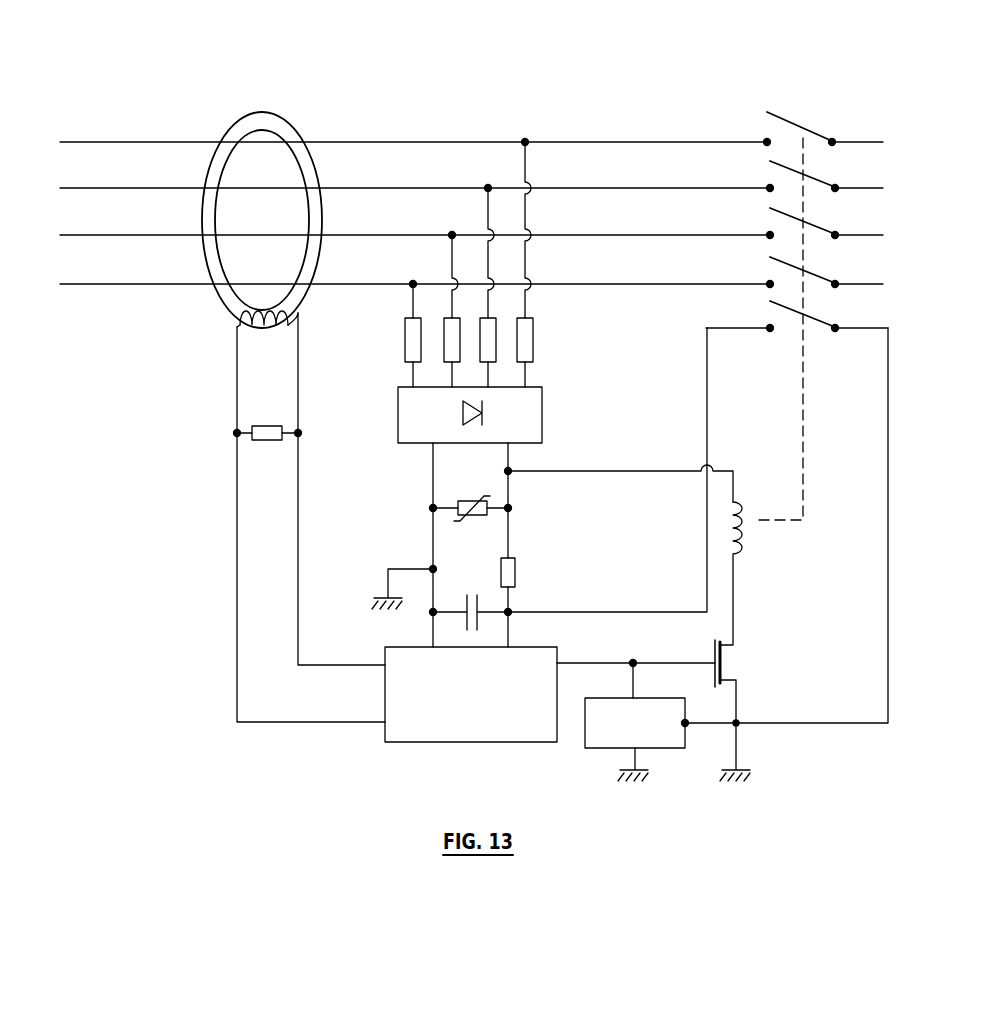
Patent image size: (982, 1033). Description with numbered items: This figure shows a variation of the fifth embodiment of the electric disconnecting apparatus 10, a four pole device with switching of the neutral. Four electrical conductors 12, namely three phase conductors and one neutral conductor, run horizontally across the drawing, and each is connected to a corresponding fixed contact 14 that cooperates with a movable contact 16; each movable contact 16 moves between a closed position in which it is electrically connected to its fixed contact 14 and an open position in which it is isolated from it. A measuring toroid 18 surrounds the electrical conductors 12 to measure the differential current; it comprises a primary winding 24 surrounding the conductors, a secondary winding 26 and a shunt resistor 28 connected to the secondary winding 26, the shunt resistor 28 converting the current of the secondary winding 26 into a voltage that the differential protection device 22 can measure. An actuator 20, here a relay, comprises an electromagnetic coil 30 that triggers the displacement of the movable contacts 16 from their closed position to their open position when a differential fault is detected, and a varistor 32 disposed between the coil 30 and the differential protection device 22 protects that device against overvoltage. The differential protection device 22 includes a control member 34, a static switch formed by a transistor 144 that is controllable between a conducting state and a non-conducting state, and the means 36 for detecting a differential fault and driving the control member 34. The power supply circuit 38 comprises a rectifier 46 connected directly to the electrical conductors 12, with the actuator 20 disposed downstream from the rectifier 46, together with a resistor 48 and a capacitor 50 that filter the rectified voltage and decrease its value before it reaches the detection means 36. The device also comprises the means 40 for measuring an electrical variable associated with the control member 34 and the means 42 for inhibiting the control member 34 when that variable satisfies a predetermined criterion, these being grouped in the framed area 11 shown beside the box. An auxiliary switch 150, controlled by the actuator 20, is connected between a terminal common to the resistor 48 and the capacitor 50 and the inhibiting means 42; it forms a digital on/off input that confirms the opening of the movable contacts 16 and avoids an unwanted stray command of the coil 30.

The electric disconnecting apparatus 10 is at (154, 385).
The electrical conductors 12 is at (165, 143).
The fixed contacts 14 is at (767, 140).
The movable contacts 16 is at (793, 118).
The measuring toroid 18 is at (276, 203).
The actuator 20 is at (825, 503).
The differential protection device 22 is at (918, 628).
The primary winding 24 is at (301, 128).
The secondary winding 26 is at (262, 332).
The shunt resistor 28 is at (267, 441).
The electromagnetic coil 30 is at (752, 540).
The varistor 32 is at (460, 502).
The control member 34 is at (670, 557).
The detection and driving means 36 is at (388, 688).
The power supply circuit 38 is at (378, 515).
The measuring means 40 is at (660, 722).
The inhibiting means 42 is at (660, 722).
The rectifier 46 is at (542, 415).
The resistor 48 is at (516, 577).
The capacitor 50 is at (455, 600).
The transistor 144 is at (748, 661).
The auxiliary switch 150 is at (817, 345).
The ground reference II 11 is at (655, 748).